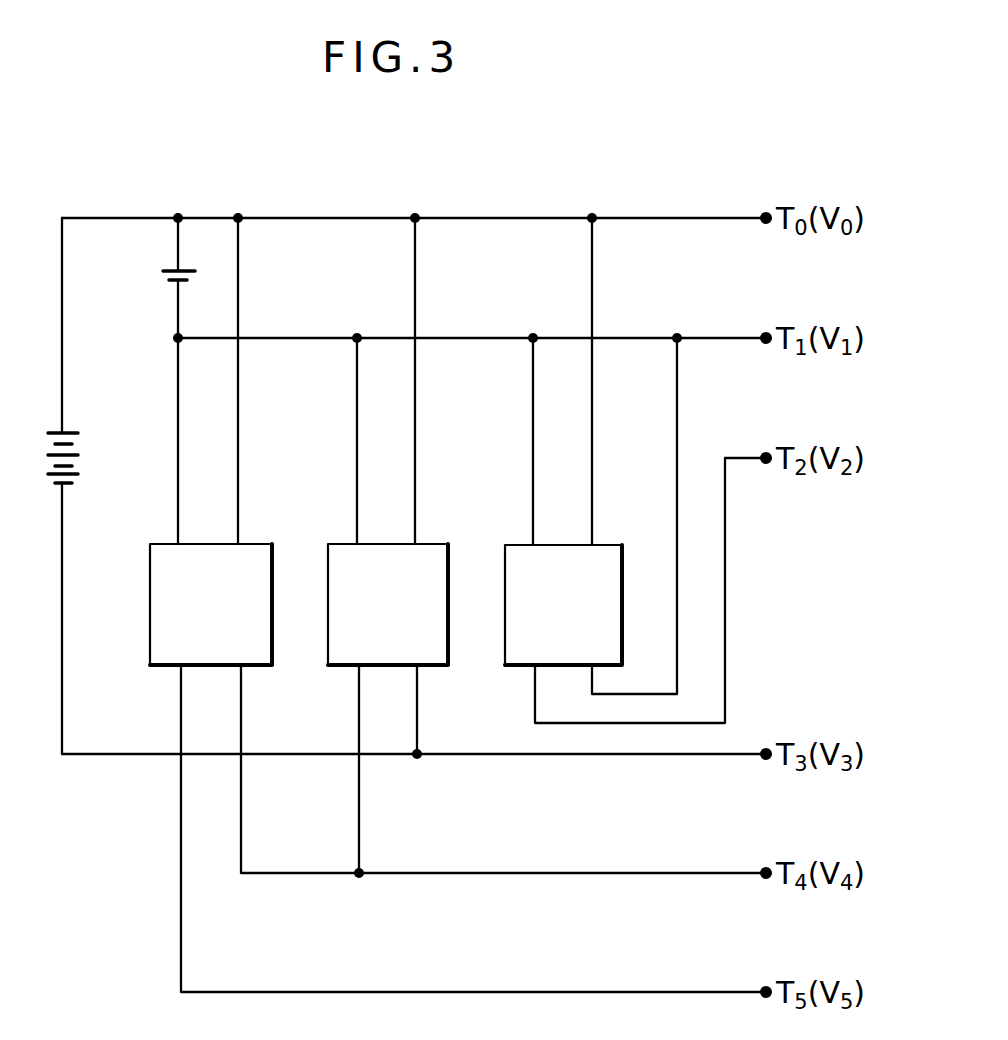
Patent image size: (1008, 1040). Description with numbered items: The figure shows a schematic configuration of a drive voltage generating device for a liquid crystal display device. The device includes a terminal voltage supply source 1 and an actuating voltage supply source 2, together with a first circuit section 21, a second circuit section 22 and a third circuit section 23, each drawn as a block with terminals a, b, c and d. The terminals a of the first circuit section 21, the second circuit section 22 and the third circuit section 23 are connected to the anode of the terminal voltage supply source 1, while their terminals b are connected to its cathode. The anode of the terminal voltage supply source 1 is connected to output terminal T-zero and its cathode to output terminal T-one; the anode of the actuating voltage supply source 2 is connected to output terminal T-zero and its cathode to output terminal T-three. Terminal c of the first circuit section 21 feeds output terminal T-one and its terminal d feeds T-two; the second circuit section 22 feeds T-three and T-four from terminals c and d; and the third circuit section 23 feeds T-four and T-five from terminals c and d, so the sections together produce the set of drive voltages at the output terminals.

The terminal voltage supply source 1 is at (161, 269).
The actuating voltage supply source 2 is at (72, 431).
The first circuit section 21 is at (504, 625).
The second circuit section 22 is at (328, 618).
The third circuit section 23 is at (149, 610).